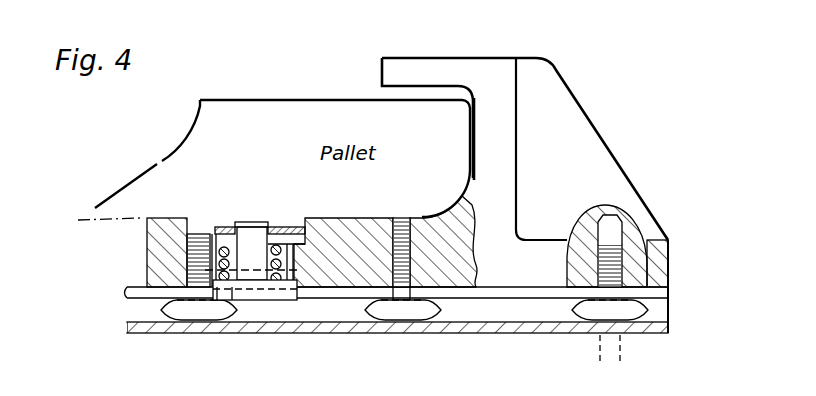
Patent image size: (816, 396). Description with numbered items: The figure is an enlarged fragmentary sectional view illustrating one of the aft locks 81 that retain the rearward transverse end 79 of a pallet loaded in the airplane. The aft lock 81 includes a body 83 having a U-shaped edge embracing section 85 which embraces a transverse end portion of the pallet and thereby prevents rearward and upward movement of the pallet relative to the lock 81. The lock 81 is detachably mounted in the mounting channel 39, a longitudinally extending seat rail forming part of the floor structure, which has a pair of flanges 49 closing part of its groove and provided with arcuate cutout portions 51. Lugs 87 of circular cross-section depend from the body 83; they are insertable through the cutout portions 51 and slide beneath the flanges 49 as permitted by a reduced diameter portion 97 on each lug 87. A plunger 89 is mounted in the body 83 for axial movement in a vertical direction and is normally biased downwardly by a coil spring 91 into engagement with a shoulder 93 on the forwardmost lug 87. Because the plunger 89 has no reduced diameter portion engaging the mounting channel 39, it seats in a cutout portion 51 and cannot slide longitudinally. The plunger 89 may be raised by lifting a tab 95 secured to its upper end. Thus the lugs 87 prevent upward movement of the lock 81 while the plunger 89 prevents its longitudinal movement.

The mounting channel 39 is at (318, 340).
The flanges 49 is at (137, 297).
The cutout portions 51 is at (280, 300).
The rearward transverse end 79 is at (475, 123).
The aft lock 81 is at (421, 56).
The body 83 is at (453, 262).
The edge embracing section 85 is at (428, 68).
The lugs 87 is at (212, 322).
The plunger 89 is at (267, 300).
The coil spring 91 is at (256, 281).
The shoulder 93 is at (228, 300).
The tab 95 is at (277, 232).
The reduced diameter portion 97 is at (374, 290).